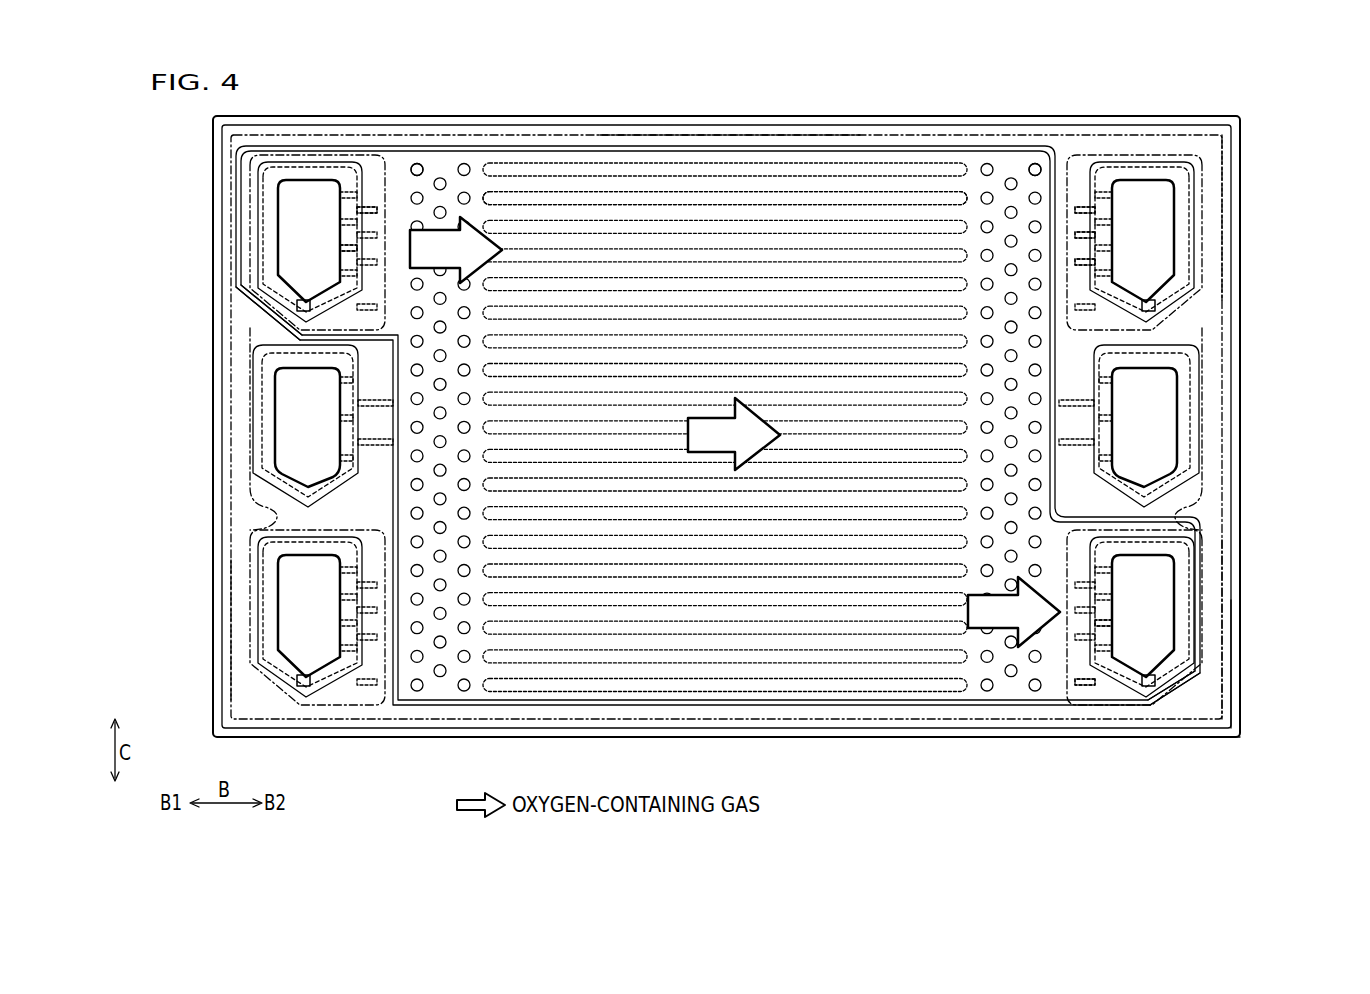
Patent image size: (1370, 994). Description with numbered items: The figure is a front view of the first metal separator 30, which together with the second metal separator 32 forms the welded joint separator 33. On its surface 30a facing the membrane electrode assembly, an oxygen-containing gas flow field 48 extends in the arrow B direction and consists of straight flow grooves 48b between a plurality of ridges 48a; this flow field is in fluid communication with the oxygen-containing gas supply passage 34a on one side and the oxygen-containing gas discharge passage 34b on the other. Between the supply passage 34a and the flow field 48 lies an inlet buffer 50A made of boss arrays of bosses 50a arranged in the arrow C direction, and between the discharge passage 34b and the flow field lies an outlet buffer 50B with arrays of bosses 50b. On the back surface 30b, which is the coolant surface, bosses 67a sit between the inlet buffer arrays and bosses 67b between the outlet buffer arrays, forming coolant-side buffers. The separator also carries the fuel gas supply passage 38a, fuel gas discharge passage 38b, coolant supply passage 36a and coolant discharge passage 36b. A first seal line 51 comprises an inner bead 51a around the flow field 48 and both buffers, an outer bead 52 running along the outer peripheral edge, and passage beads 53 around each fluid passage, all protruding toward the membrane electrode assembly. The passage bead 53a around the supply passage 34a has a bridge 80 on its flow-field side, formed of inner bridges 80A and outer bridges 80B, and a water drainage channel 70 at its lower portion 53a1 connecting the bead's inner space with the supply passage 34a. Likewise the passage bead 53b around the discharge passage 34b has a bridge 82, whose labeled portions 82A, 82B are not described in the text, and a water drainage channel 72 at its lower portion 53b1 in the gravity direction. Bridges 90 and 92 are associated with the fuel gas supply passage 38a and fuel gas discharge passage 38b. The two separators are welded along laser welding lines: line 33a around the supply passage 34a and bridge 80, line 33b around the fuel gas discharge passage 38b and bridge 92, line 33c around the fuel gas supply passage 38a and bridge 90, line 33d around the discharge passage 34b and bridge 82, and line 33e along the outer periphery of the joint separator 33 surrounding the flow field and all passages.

The first metal separator 30 is at (810, 114).
The surface 30a is at (1215, 698).
The another surface 30b is at (1205, 712).
The second metal separator 32 is at (873, 122).
The joint separator 33 is at (1179, 83).
The laser welding line 33a is at (245, 280).
The laser welding line 33b is at (245, 540).
The laser welding line 33c is at (1218, 128).
The laser welding line 33d is at (1218, 630).
The laser welding line 33e is at (730, 133).
The oxygen-containing gas supply passage 34a is at (290, 200).
The oxygen-containing gas discharge passage 34b is at (1158, 585).
The coolant supply passage 36a is at (297, 400).
The coolant discharge passage 36b is at (1165, 405).
The fuel gas supply passage 38a is at (1160, 200).
The fuel gas discharge passage 38b is at (290, 580).
The oxygen-containing gas flow field 48 is at (645, 87).
The ridges 48a is at (562, 198).
The straight flow grooves 48b is at (627, 185).
The inlet buffer 50A is at (463, 163).
The bosses 50a is at (0, 0).
The outlet buffer 50B is at (1034, 163).
The bosses 50b is at (0, 0).
The first seal line 51 is at (958, 779).
The inner bead 51a is at (800, 711).
The outer bead 52 is at (843, 727).
The passage beads 53 is at (265, 210).
The passage bead 53a is at (0, 0).
The lower portion 53a1 is at (282, 297).
The passage bead 53b is at (0, 0).
The lower portion 53b1 is at (1168, 668).
The bosses 67a is at (440, 678).
The bosses 67b is at (1011, 678).
The water drainage channel 70 is at (297, 299).
The water drainage channel 72 is at (1140, 686).
The bridge 80 is at (370, 185).
The inner bridges 80A is at (343, 248).
The outer bridges 80B is at (380, 207).
The bridge 82 is at (1057, 692).
The inner bridge 82A is at (1105, 620).
The outer bridge 82B is at (1075, 690).
The bridge 90 is at (1082, 195).
The bridge 92 is at (363, 696).